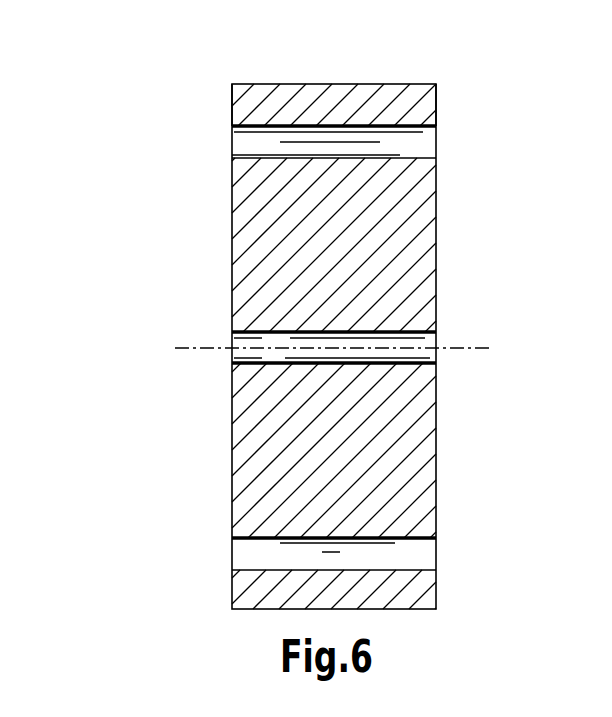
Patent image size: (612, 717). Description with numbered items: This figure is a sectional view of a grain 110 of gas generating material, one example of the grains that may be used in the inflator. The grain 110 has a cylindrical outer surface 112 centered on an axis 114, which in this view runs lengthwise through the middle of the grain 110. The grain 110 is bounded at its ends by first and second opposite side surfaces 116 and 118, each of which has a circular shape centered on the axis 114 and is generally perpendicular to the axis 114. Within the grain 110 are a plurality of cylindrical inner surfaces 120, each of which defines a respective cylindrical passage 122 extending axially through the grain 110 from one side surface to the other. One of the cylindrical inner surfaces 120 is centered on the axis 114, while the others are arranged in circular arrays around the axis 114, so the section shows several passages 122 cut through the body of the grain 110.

The grain 110 is at (96, 115).
The cylindrical outer surface 112 is at (334, 85).
The axis 114 is at (180, 347).
The first side surface 116 is at (232, 104).
The second side surface 118 is at (436, 110).
The cylindrical inner surface 120 is at (257, 156).
The cylindrical passage 122 is at (229, 137).